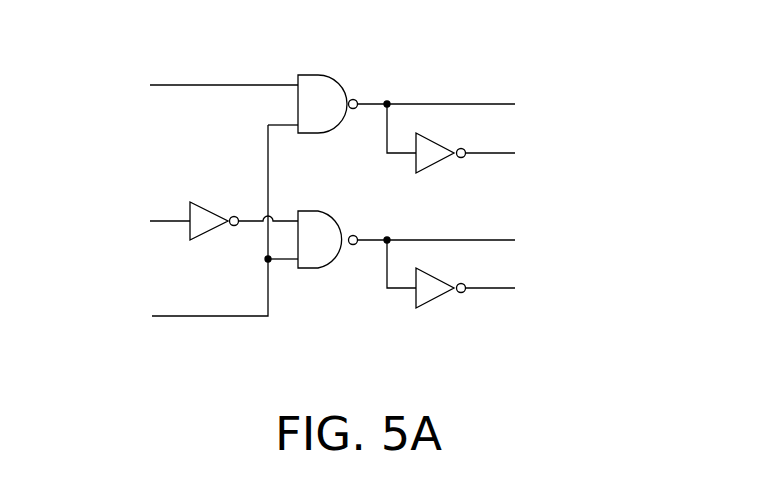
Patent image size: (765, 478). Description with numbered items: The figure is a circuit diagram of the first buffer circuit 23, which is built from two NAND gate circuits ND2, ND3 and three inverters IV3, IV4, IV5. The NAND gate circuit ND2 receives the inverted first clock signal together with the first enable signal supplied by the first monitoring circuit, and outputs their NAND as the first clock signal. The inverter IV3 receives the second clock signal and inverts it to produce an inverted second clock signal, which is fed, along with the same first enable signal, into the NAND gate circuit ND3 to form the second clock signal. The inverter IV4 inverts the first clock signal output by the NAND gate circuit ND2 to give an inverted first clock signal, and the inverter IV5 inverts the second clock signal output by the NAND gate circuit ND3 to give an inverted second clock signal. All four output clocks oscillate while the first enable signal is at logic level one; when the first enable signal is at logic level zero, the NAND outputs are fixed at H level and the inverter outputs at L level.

The first buffer circuit 23 is at (588, 30).
The NAND gate circuit ND2 is at (330, 80).
The NAND gate circuit ND3 is at (330, 214).
The inverter IV3 is at (208, 204).
The inverter IV4 is at (440, 143).
The inverter IV5 is at (440, 278).